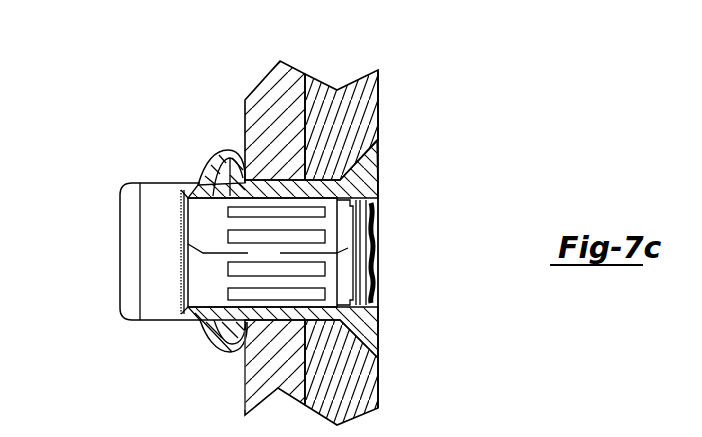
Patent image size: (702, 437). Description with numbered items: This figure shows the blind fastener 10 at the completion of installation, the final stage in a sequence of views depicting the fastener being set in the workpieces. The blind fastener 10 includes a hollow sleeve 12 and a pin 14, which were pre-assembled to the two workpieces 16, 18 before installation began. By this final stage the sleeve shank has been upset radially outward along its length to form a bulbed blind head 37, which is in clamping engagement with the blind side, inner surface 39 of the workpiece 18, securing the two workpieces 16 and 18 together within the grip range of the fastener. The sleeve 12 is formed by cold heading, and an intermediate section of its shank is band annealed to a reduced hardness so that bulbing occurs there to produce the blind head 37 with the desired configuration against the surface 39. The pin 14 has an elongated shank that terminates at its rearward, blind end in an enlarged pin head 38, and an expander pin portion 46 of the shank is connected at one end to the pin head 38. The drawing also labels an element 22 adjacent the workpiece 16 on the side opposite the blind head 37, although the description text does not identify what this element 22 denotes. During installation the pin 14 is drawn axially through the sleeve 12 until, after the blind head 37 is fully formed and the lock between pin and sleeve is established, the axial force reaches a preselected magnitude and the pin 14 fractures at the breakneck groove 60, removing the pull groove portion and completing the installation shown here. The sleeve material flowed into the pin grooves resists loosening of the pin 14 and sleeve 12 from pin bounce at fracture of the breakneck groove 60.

The blind fastener 10 is at (152, 350).
The hollow sleeve 12 is at (210, 322).
The pin 14 is at (348, 190).
The workpiece 16 is at (322, 90).
The workpiece 18 is at (276, 82).
The countersunk flange portion 22 is at (370, 325).
The bulbed blind head 37 is at (227, 148).
The pin head 38 is at (124, 250).
The blind side inner surface 39 is at (245, 373).
The expander pin portion 46 is at (262, 253).
The breakneck groove 60 is at (378, 241).